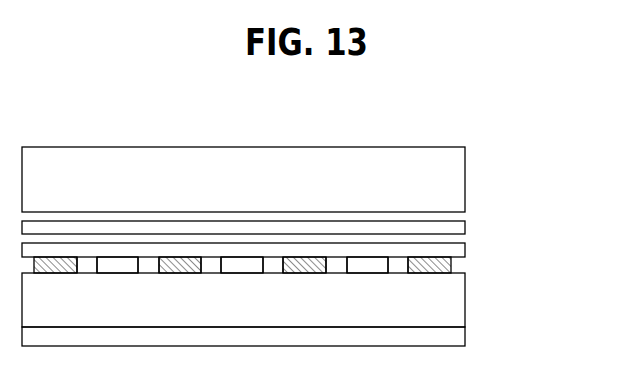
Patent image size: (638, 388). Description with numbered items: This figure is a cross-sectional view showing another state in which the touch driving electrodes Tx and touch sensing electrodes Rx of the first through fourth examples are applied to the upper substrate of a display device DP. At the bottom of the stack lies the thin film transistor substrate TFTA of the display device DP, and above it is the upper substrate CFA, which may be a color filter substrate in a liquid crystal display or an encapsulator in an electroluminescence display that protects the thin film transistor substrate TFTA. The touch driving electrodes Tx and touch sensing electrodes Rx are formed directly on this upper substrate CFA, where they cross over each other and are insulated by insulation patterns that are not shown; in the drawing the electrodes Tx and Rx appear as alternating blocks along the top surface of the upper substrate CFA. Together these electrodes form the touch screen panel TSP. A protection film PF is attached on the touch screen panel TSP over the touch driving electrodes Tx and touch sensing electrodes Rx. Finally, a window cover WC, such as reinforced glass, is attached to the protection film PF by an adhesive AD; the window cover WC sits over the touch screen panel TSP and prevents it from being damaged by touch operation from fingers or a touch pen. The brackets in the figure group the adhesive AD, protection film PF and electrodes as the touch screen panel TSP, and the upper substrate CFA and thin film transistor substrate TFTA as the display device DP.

The window cover WC is at (453, 177).
The touch screen panel TSP is at (303, 184).
The adhesive AD is at (453, 228).
The protection film PF is at (453, 251).
The touch driving electrodes Tx is at (55, 262).
The touch sensing electrodes Rx is at (117, 263).
The display device DP is at (309, 310).
The upper substrate (color filter substrate / encapsulator) CFA is at (453, 290).
The thin film transistor substrate TFTA is at (453, 337).